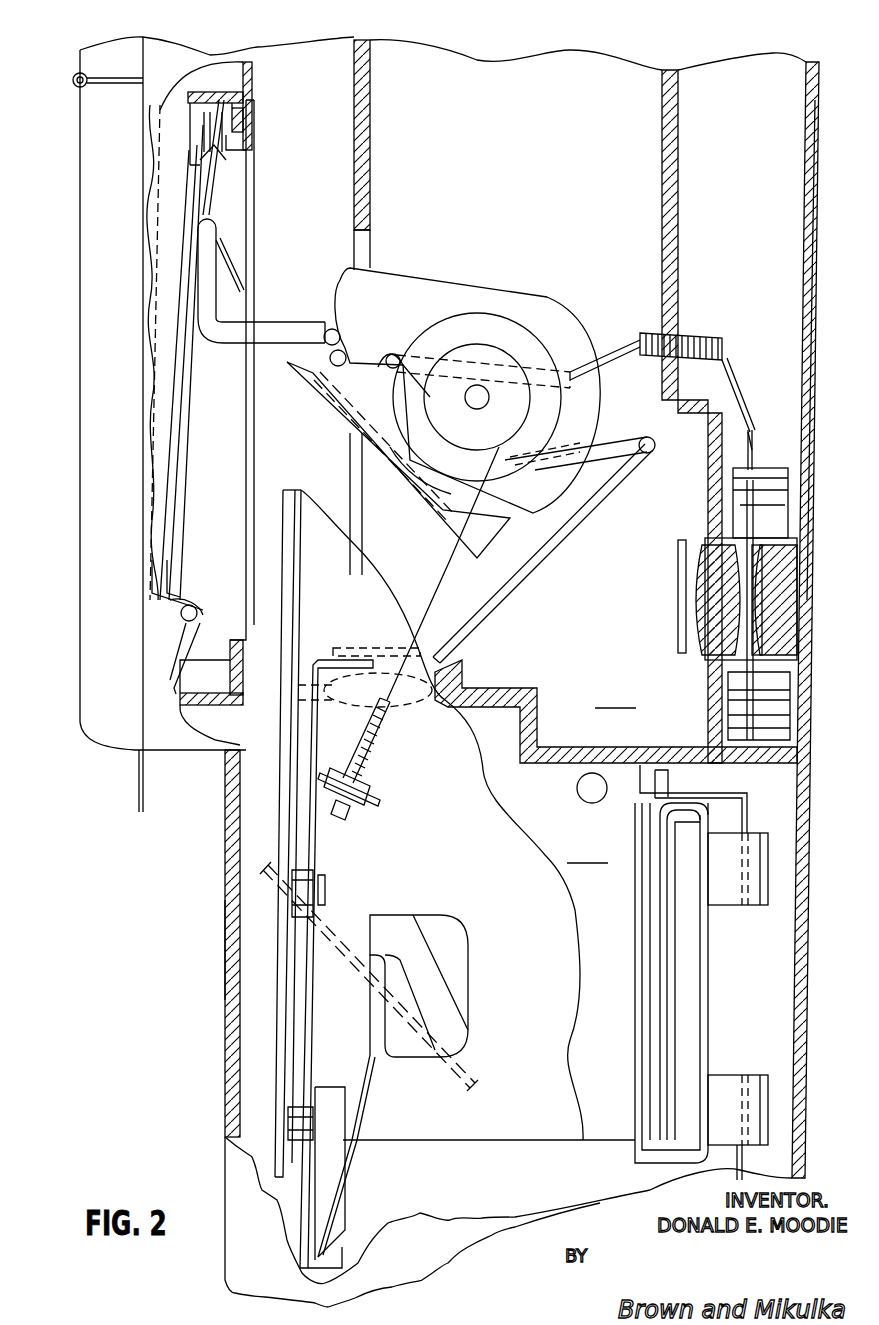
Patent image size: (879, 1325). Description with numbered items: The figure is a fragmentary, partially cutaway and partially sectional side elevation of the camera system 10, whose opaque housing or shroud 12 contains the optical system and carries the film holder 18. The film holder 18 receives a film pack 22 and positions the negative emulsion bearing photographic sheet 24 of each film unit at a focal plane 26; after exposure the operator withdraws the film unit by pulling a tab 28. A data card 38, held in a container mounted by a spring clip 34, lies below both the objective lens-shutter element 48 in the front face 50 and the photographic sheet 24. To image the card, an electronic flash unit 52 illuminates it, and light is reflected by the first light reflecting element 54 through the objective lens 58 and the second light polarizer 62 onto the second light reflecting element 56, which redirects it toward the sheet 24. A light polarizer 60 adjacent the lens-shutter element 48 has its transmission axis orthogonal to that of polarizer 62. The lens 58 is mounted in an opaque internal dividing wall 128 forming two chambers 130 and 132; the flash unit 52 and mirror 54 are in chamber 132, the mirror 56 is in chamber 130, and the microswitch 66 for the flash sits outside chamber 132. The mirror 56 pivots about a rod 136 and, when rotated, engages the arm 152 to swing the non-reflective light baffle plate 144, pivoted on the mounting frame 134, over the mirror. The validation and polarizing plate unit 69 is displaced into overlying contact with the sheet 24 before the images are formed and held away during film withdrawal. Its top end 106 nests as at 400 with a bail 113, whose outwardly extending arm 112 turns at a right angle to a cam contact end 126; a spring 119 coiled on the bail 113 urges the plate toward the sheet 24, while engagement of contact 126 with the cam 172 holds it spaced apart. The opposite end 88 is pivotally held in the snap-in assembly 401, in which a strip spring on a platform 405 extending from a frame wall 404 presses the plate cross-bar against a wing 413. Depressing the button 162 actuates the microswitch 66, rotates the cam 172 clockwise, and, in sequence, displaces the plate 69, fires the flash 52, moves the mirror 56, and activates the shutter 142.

The camera system 10 is at (205, 942).
The opaque housing or shroud 12 is at (812, 137).
The film holder 18 is at (76, 235).
The film pack 22 is at (148, 150).
The photographic sheet 24 is at (148, 153).
The focal plane 26 is at (147, 397).
The tab 28 is at (137, 790).
The spring clip 34 is at (735, 830).
The data card 38 is at (652, 1130).
The objective lens-shutter element 48 is at (800, 512).
The front face 50 is at (810, 230).
The electronic flash unit 52 is at (578, 788).
The first light reflecting element 54 is at (470, 1082).
The second light reflecting element 56 is at (497, 363).
The objective lens 58 is at (398, 722).
The light polarizer 60 is at (676, 615).
The second light polarizer 62 is at (375, 650).
The microswitch 66 is at (452, 920).
The validation and polarizing plate unit 69 is at (175, 275).
The end of the validation plate 88 is at (158, 570).
The top end of the validation plate 106 is at (200, 152).
The outwardly extending arm 112 is at (210, 232).
The bail 113 is at (216, 200).
The spring 119 is at (235, 275).
The cam contact end 126 is at (330, 328).
The internal dividing wall 128 is at (503, 690).
The chamber 130 is at (615, 694).
The chamber 132 is at (587, 849).
The mounting frame 134 is at (670, 262).
The rod 136 is at (318, 355).
The shutter 142 is at (758, 620).
The light baffle plate 144 is at (517, 590).
The arm 152 is at (618, 446).
The button 162 is at (327, 662).
The cam 172 is at (548, 302).
The nesting assembly 400 is at (212, 108).
The snap-in assembly 401 is at (175, 630).
The frame wall 404 is at (215, 720).
The platform 405 is at (208, 706).
The wing 413 is at (176, 645).